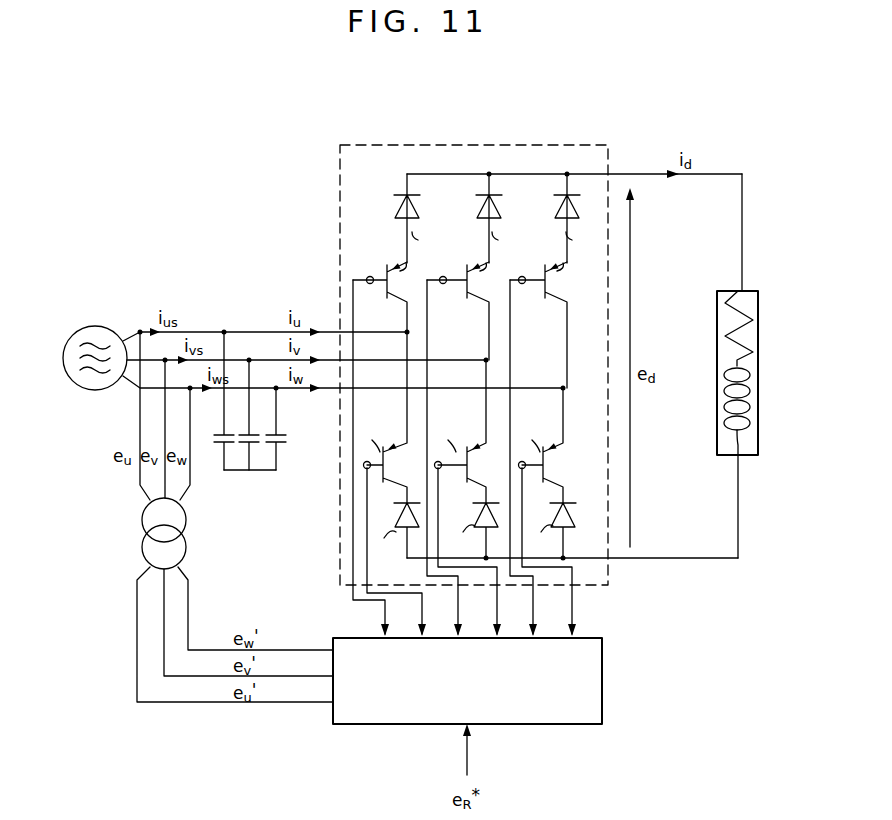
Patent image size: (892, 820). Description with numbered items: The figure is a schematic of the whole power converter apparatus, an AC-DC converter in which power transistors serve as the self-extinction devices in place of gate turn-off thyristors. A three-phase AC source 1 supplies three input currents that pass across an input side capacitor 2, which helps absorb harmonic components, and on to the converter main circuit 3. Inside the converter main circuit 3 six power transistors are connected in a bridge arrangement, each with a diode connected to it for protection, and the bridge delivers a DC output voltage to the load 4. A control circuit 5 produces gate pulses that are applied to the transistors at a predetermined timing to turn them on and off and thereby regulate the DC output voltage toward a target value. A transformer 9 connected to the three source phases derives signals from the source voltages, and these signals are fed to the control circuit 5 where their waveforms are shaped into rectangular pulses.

The three-phase AC source 1 is at (92, 326).
The input side capacitor 2 is at (282, 445).
The converter main circuit 3 is at (549, 145).
The load 4 is at (757, 294).
The control circuit 5 is at (602, 685).
The transformer 9 is at (142, 520).